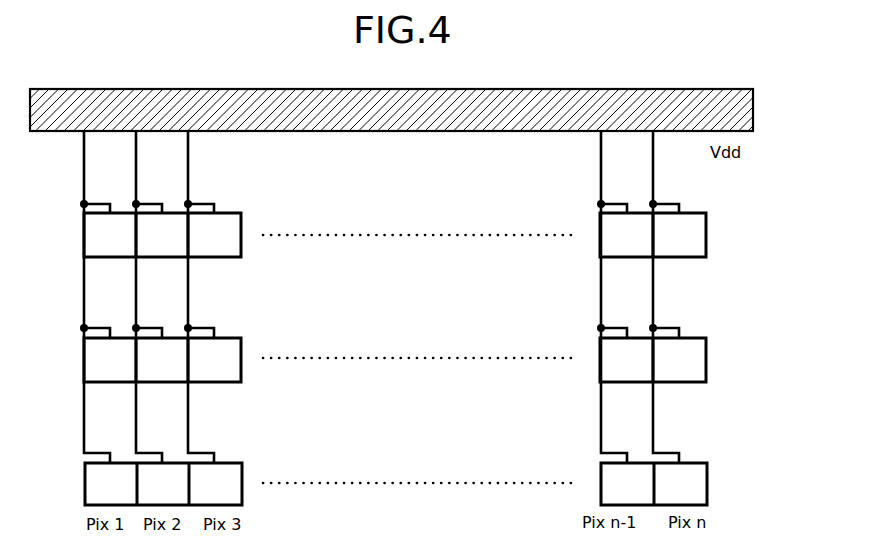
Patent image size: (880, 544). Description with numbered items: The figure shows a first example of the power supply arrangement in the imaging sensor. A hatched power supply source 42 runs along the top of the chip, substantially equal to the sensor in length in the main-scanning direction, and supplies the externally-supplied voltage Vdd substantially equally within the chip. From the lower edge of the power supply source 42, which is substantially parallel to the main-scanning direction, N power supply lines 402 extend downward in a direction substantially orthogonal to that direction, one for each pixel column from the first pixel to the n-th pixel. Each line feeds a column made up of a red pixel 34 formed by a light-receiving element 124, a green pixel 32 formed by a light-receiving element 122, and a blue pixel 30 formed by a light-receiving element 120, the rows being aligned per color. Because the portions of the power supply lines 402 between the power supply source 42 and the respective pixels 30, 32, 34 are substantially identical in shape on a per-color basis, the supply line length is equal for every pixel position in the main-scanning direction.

The power supply source 42 is at (388, 89).
The power supply lines 402 is at (84, 188).
The pixels for R 34 is at (427, 223).
The light-receiving element for R 124 is at (690, 213).
The pixels for G 32 is at (427, 348).
The light-receiving element for G 122 is at (690, 338).
The pixels for B 30 is at (429, 472).
The light-receiving element for B 120 is at (692, 463).